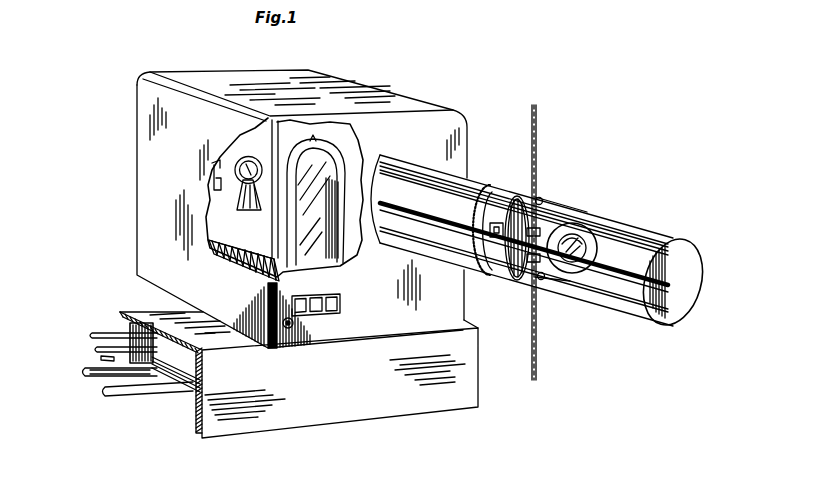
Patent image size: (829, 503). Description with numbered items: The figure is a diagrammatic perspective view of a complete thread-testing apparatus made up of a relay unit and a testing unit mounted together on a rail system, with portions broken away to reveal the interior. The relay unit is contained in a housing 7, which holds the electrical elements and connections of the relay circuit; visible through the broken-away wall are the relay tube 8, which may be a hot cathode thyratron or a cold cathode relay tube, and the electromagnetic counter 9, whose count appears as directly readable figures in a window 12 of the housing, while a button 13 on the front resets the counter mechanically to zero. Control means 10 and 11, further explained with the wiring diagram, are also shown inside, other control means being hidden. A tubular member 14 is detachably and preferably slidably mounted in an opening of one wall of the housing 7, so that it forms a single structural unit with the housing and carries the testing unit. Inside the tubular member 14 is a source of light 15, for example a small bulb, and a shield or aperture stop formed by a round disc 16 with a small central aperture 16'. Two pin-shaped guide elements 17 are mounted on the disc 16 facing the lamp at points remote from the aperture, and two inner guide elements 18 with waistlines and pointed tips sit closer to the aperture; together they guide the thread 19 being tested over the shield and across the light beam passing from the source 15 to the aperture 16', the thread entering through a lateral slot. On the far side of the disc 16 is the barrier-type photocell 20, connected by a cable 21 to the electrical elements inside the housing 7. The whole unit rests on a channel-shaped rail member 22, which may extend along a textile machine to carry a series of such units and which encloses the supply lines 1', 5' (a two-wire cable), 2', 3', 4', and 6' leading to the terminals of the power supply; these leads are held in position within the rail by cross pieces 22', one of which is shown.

The housing 7 is at (347, 90).
The relay tube 8 is at (320, 153).
The electromagnetic counter 9 is at (238, 270).
The control means 10 is at (213, 162).
The control means 11 is at (245, 214).
The window 12 is at (338, 298).
The button 13 is at (296, 326).
The tubular member 14 is at (649, 238).
The source of light 15 is at (584, 236).
The round disc 16 is at (515, 219).
The aperture 16' is at (573, 234).
The pin-shaped guide elements 17 is at (539, 200).
The inner guide elements 18 is at (541, 222).
The thread 19 is at (538, 118).
The barrier-type photocell 20 is at (497, 243).
The cable 21 is at (485, 192).
The channel-shaped rail member 22 is at (299, 392).
The cross piece 22' is at (161, 377).
The supply line 1' is at (103, 392).
The supply line 2' is at (126, 317).
The supply line 3' is at (112, 313).
The supply line 4' is at (82, 347).
The supply line 5' is at (120, 372).
The supply line 6' is at (148, 409).